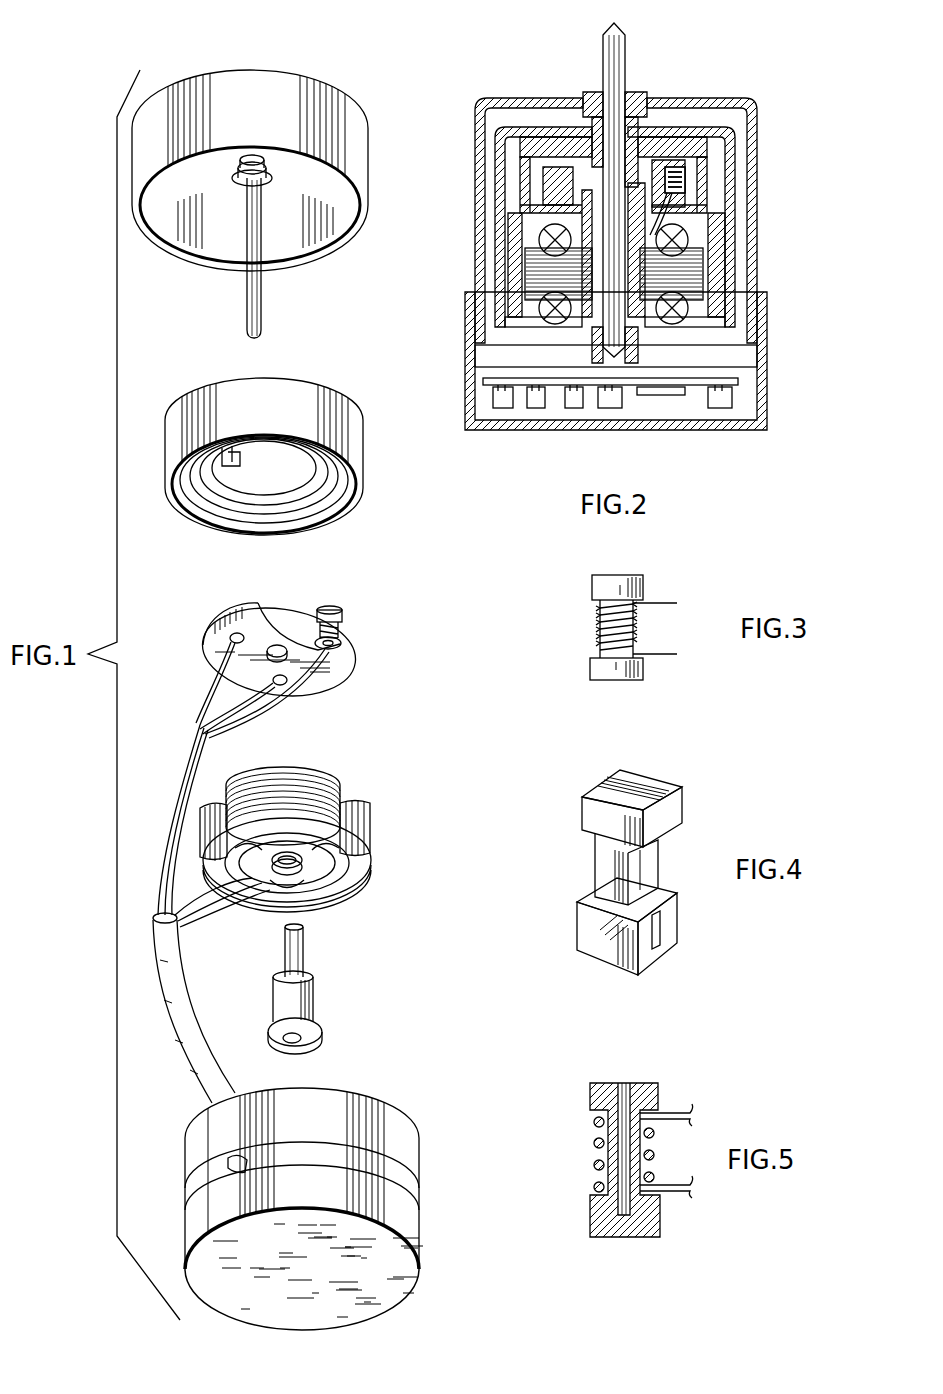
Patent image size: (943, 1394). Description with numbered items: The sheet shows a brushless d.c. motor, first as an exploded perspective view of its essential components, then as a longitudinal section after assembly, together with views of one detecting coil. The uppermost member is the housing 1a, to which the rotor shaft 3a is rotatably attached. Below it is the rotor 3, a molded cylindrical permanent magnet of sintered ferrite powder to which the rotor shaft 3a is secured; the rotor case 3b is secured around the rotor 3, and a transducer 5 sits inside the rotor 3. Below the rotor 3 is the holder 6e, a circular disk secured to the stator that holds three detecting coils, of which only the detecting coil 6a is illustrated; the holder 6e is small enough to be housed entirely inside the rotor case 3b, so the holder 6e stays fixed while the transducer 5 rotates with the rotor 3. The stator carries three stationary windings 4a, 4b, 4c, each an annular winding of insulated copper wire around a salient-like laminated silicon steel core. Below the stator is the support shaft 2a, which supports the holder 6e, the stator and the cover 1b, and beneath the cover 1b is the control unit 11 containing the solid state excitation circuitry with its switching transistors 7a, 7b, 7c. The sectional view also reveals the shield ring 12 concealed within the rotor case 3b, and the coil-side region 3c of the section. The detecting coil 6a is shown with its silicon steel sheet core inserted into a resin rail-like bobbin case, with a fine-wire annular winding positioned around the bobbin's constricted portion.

In FIG. 1, the housing 1a is at (308, 90).
In FIG. 2, the housing 1a is at (757, 117).
In FIG. 1, the cover 1b is at (327, 1209).
In FIG. 2, the cover 1b is at (762, 330).
In FIG. 1, the support shaft 2a is at (308, 997).
In FIG. 1, the rotor 3 is at (286, 451).
In FIG. 1, the rotor shaft 3a is at (262, 317).
In FIG. 1, the rotor case 3b is at (352, 440).
In FIG. 2, the rotor case 3b is at (735, 183).
In FIG. 2, the coil 3c is at (718, 248).
In FIG. 1, the stationary winding 4a is at (288, 788).
In FIG. 1, the stationary winding 4b is at (250, 890).
In FIG. 1, the stationary winding 4c is at (370, 840).
In FIG. 1, the transducer 5 is at (296, 462).
In FIG. 1, the detecting coil 6a is at (343, 633).
In FIG. 2, the detecting coil 6a is at (673, 167).
In FIG. 3, the detecting coil 6a is at (600, 590).
In FIG. 4, the detecting coil 6a is at (592, 808).
In FIG. 5, the detecting coil 6a is at (587, 1090).
In FIG. 1, the holder 6e is at (333, 663).
In FIG. 2, the switching transistor 7a is at (505, 412).
In FIG. 2, the switching transistor 7b is at (537, 412).
In FIG. 2, the switching transistor 7c is at (568, 412).
In FIG. 1, the control unit 11 is at (397, 1282).
In FIG. 2, the control unit 11 is at (745, 407).
In FIG. 2, the shield ring 12 is at (518, 172).